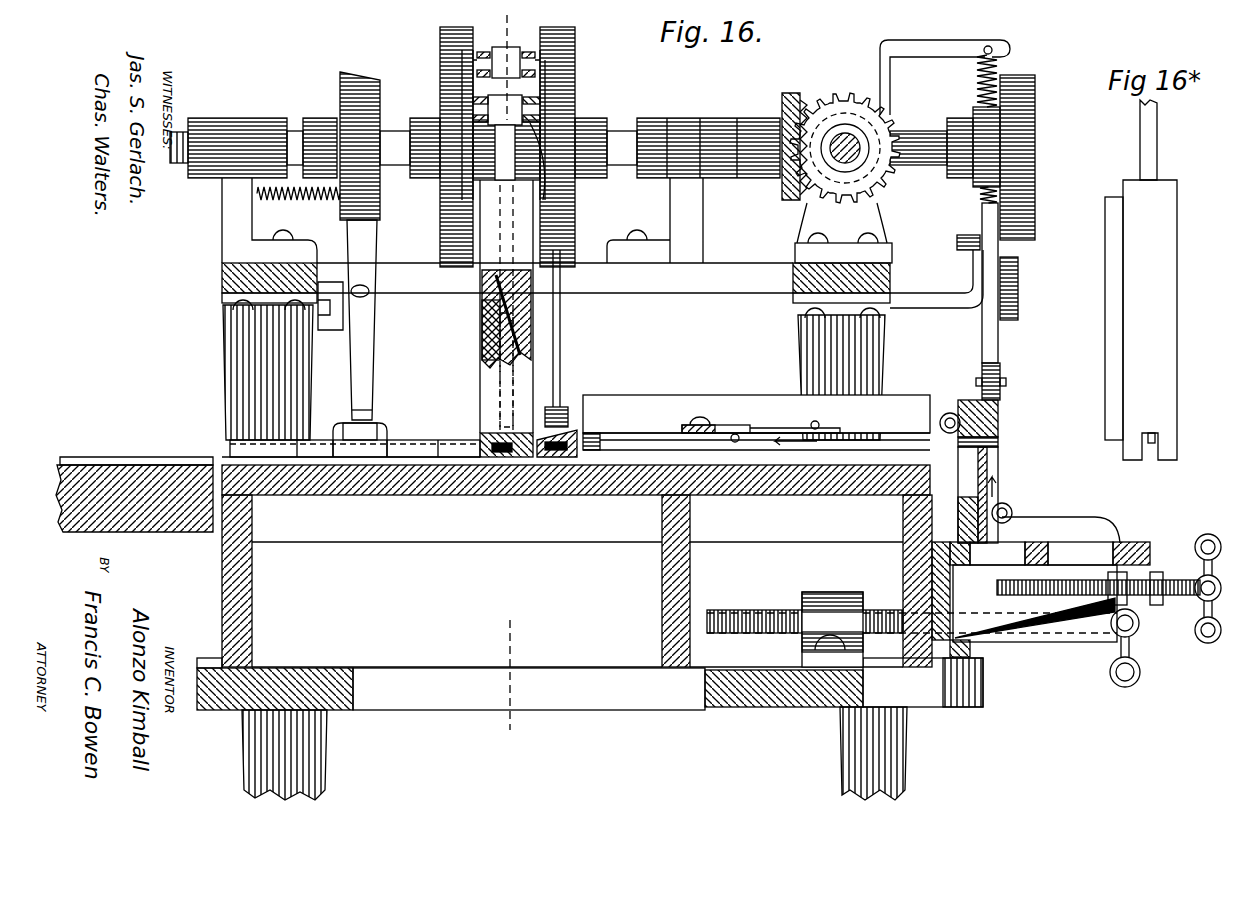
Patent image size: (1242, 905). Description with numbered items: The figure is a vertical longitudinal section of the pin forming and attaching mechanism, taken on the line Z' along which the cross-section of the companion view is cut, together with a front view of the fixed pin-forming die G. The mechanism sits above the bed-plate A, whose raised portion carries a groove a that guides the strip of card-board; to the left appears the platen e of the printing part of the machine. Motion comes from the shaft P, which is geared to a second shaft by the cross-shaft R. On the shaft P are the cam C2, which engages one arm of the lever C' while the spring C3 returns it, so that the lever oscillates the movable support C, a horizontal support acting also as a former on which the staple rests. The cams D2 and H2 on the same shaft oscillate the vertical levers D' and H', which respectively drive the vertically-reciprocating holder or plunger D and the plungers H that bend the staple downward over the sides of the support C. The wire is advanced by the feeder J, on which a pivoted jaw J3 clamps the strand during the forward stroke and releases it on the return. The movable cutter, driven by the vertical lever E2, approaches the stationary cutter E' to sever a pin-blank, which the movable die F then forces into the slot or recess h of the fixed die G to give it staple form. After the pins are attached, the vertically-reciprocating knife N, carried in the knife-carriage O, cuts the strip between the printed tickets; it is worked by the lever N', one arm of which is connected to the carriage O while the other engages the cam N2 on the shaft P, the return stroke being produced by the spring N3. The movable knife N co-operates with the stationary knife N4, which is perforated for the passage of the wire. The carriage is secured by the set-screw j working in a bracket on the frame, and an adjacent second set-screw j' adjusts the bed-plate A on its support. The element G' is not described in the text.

In FIG. 16, the shaft P is at (617, 145).
In FIG. 16, the cam C2 is at (360, 137).
In FIG. 16, the spring C3 is at (298, 201).
In FIG. 16, the lever C' is at (299, 299).
In FIG. 16, the movable support C is at (355, 436).
In FIG. 16, the cam D2 is at (456, 135).
In FIG. 16, the cam H2 is at (557, 135).
In FIG. 16, the vertical lever H' is at (531, 120).
In FIG. 16, the vertical lever D' is at (539, 141).
In FIG. 16, the section line Z' is at (505, 379).
In FIG. 16, the cross-shaft R is at (846, 138).
In FIG. 16, the holder or plunger D is at (513, 279).
In FIG. 16, the plunger H is at (521, 240).
The plunger H is at (1139, 140).
In FIG. 16, the groove a is at (480, 405).
In FIG. 16, the movable die F is at (507, 460).
In FIG. 16, the vertical lever E2 is at (556, 372).
In FIG. 16, the stationary cutter E' is at (559, 478).
In FIG. 16, the feeder J is at (756, 428).
In FIG. 16, the jaw J3 is at (753, 422).
In FIG. 16, the bed-plate A is at (590, 628).
In FIG. 16, the platen e is at (134, 485).
In FIG. 16, the set-screw j' is at (1066, 602).
In FIG. 16, the set-screw j is at (1197, 588).
In FIG. 16, the cam N2 is at (1014, 157).
In FIG. 16, the spring N3 is at (998, 67).
In FIG. 16, the lever N' is at (954, 293).
In FIG. 16, the stationary knife N4 is at (977, 457).
In FIG. 16, the knife-carriage O is at (985, 495).
In FIG. 16, the knife N is at (985, 495).
The fixed die G is at (1141, 320).
The slot or recess h is at (1132, 437).
The pin G' is at (1177, 439).